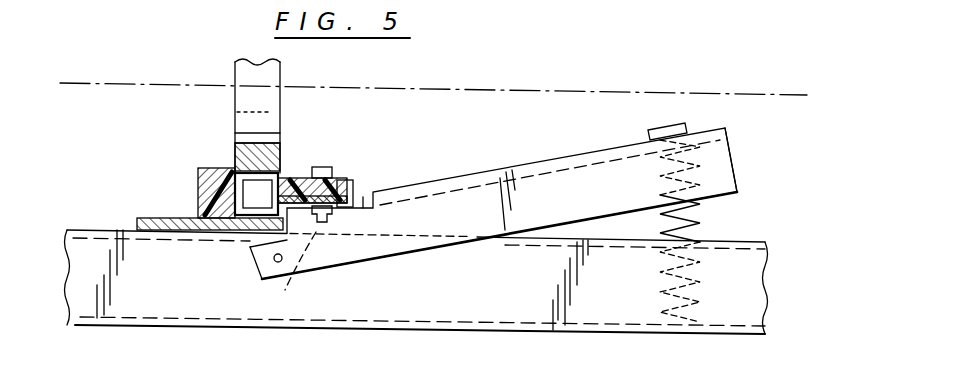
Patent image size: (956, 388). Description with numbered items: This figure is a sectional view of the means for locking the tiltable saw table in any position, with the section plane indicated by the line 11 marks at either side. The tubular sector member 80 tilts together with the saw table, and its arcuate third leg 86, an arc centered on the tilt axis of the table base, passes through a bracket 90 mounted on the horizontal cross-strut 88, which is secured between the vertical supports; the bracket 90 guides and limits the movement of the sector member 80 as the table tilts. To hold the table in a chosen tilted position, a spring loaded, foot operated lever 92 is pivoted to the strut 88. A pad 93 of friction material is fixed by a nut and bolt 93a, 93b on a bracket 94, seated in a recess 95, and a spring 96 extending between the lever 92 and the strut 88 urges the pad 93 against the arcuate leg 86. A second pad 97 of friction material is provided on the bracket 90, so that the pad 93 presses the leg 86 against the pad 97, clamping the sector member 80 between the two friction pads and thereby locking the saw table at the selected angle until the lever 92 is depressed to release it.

The section line 11- 11 is at (93, 83).
The sector member 80 is at (226, 111).
The arcuate third leg 86 is at (255, 178).
The cross-strut 88 is at (338, 316).
The bracket 90 is at (200, 203).
The lever 92 is at (728, 170).
The pad of friction material 93 is at (350, 190).
The nut 93a is at (327, 170).
The bolt 93b is at (264, 272).
The bracket 94 is at (380, 194).
The recess 95 is at (363, 202).
The spring 96 is at (702, 222).
The pad of friction material 97 is at (225, 168).